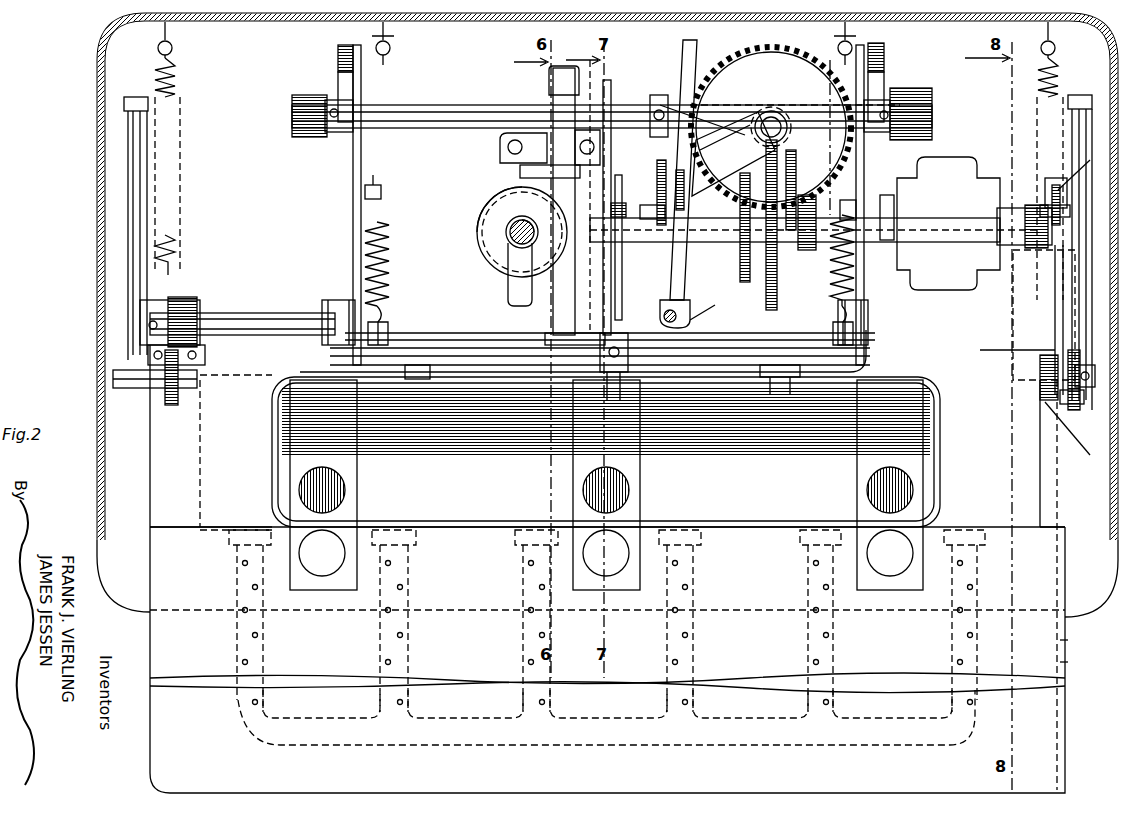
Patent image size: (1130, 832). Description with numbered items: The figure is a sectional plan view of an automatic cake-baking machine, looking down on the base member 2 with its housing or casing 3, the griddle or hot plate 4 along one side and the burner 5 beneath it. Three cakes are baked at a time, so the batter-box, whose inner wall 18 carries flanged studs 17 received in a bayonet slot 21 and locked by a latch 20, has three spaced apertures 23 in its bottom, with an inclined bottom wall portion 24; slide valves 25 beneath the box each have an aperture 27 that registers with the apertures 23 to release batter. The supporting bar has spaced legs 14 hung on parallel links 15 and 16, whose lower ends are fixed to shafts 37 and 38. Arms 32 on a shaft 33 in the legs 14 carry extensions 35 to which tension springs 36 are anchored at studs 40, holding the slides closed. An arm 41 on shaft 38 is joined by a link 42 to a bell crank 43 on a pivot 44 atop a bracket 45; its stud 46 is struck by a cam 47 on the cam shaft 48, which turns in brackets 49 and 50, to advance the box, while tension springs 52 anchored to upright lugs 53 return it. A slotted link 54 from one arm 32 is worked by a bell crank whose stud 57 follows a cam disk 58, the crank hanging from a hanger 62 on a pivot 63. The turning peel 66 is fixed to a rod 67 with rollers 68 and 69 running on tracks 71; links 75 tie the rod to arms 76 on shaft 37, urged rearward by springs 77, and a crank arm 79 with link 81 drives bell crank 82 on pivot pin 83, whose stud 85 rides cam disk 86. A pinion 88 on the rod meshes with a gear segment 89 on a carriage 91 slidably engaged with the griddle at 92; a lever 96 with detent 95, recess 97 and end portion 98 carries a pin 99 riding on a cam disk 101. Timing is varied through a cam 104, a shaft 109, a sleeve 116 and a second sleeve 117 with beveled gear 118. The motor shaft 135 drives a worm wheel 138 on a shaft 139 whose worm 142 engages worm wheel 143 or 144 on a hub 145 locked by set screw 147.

The base member 2 is at (120, 545).
The housing or casing 3 is at (97, 152).
The griddle or hot plate 4 is at (165, 770).
The heating element or burner 5 is at (245, 738).
The spaced legs 14 is at (352, 182).
The parallel link or arm 15 is at (330, 280).
The parallel link or arm 16 is at (338, 70).
The flanged studs 17 is at (436, 368).
The inner wall 18 is at (275, 395).
The latch 20 is at (790, 380).
The bayonet slot 21 is at (420, 366).
The spaced apertures 23 is at (347, 495).
The bottom wall portion 24 is at (278, 425).
The slide valves 25 is at (303, 592).
The aperture 27 is at (322, 572).
The arms 32 is at (632, 382).
The shaft 33 is at (466, 345).
The extension 35 is at (372, 318).
The tension spring 36 is at (392, 232).
The shaft 37 is at (248, 315).
The shaft 38 is at (470, 108).
The studs 40 is at (382, 182).
The arm 41 is at (742, 130).
The link 42 is at (697, 70).
The bell crank 43 is at (725, 168).
The pivot 44 is at (676, 170).
The bracket 45 is at (705, 135).
The stud 46 is at (658, 200).
The cam 47 is at (665, 262).
The cam shaft 48 is at (935, 225).
The bracket 49 is at (1022, 205).
The bracket 50 is at (540, 140).
The tension springs 52 is at (393, 58).
The upright lugs 53 is at (372, 38).
The slotted link 54 is at (665, 80).
The pin or stud 57 is at (622, 208).
The cam disk 58 is at (648, 200).
The hanger 62 is at (662, 310).
The pivot 63 is at (692, 322).
The peel or blade 66 is at (222, 545).
The rod 67 is at (148, 358).
The roller 68 is at (170, 400).
The roller 69 is at (1045, 402).
The tracks 71 is at (150, 392).
The links 75 is at (128, 262).
The arms 76 is at (145, 150).
The springs 77 is at (178, 84).
The crank arm 79 is at (545, 296).
The link 81 is at (549, 92).
The bell crank 82 is at (566, 68).
The pivot pin 83 is at (592, 100).
The stud 85 is at (540, 225).
The cam disk 86 is at (612, 160).
The pinion 88 is at (1082, 400).
The gear segment 89 is at (1075, 305).
The carriage 91 is at (980, 350).
The sliding engagement 92 is at (1055, 330).
The detent 95 is at (1068, 663).
The lever 96 is at (1068, 610).
The recess 97 is at (1068, 640).
The end portion 98 is at (1075, 182).
The pin 99 is at (1050, 178).
The cam disk 101 is at (1062, 218).
The cam 104 is at (575, 172).
The shaft 109 is at (530, 196).
The sleeve 116 is at (513, 220).
The second sleeve 117 is at (506, 232).
The beveled gear 118 is at (487, 245).
The motor shaft 135 is at (886, 215).
The worm wheel 138 is at (735, 65).
The shaft 139 is at (771, 110).
The worm 142 is at (790, 118).
The worm wheel 143 is at (744, 285).
The worm wheel 144 is at (768, 290).
The hub 145 is at (808, 248).
The set screw 147 is at (792, 215).